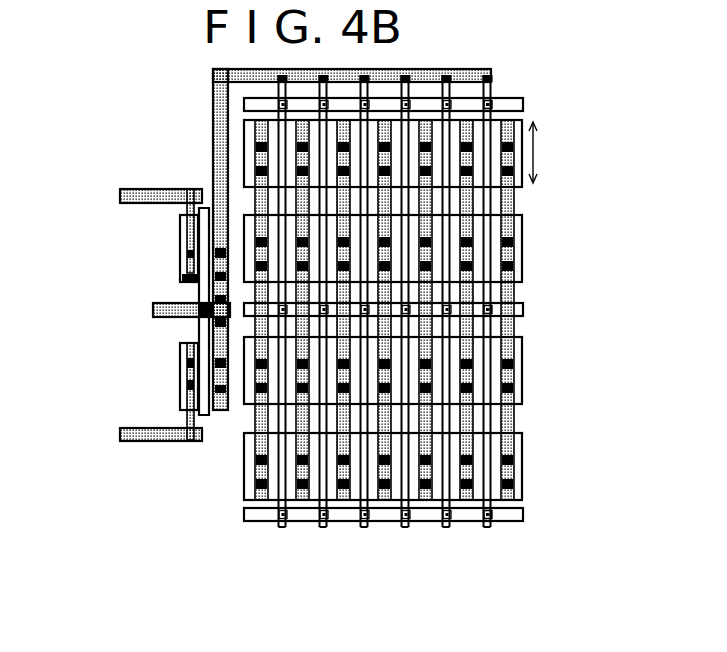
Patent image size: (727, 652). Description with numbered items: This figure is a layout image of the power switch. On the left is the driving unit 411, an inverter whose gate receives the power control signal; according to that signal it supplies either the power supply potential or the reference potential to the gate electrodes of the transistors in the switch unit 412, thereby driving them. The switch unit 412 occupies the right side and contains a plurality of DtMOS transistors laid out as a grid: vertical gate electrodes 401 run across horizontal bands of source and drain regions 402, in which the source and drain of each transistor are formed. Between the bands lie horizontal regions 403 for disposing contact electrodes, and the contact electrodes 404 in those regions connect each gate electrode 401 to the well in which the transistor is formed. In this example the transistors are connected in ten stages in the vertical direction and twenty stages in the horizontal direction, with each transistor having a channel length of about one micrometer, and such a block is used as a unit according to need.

The gate electrode 401 is at (488, 112).
The source and drain region 402 is at (522, 186).
The contact electrode region 403 is at (523, 104).
The contact electrode 404 is at (489, 119).
The driving unit 411 is at (237, 578).
The switch unit 412 is at (410, 335).